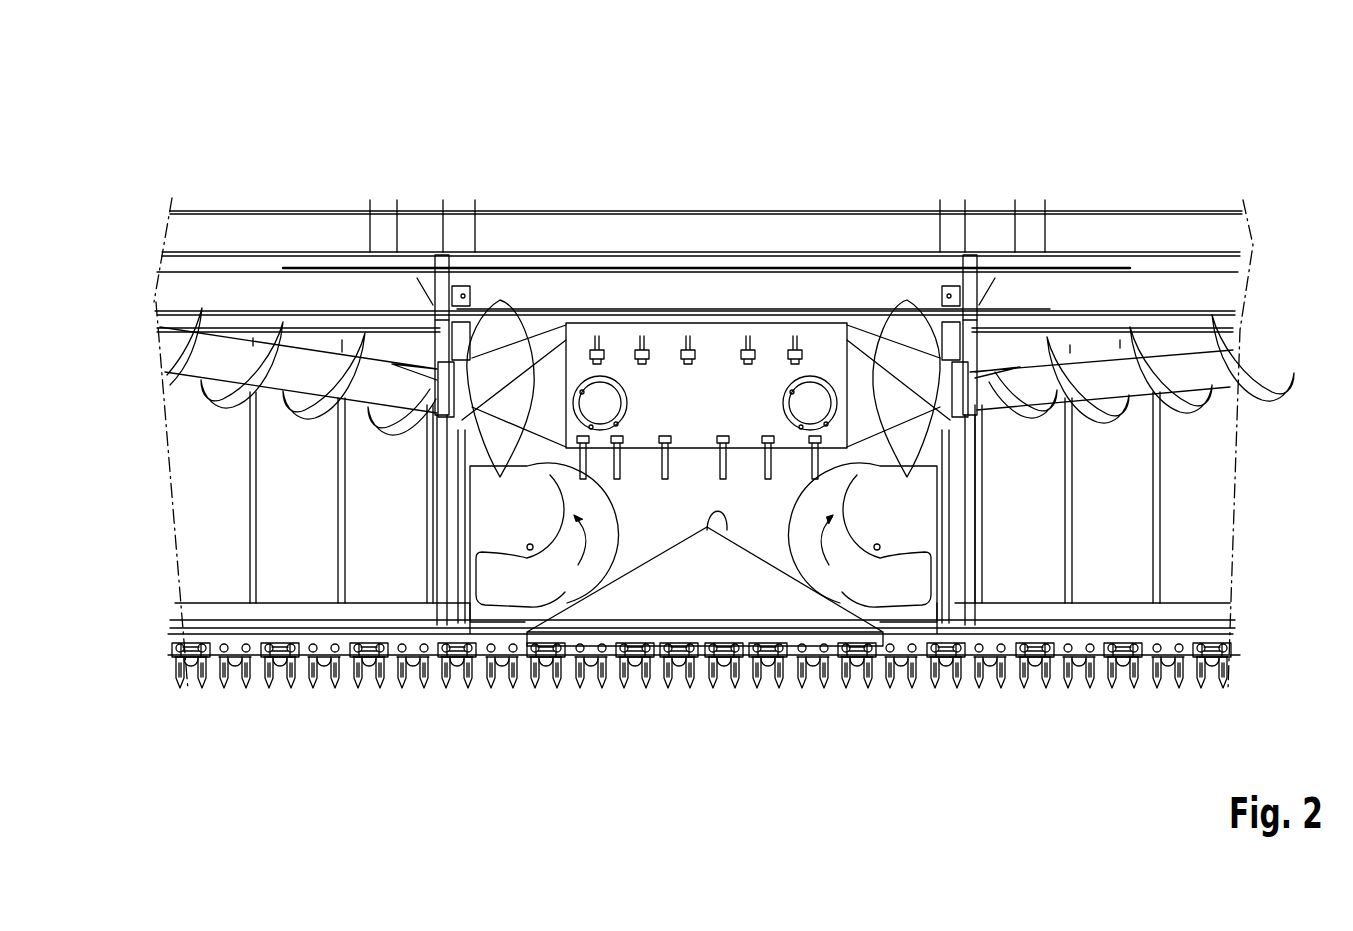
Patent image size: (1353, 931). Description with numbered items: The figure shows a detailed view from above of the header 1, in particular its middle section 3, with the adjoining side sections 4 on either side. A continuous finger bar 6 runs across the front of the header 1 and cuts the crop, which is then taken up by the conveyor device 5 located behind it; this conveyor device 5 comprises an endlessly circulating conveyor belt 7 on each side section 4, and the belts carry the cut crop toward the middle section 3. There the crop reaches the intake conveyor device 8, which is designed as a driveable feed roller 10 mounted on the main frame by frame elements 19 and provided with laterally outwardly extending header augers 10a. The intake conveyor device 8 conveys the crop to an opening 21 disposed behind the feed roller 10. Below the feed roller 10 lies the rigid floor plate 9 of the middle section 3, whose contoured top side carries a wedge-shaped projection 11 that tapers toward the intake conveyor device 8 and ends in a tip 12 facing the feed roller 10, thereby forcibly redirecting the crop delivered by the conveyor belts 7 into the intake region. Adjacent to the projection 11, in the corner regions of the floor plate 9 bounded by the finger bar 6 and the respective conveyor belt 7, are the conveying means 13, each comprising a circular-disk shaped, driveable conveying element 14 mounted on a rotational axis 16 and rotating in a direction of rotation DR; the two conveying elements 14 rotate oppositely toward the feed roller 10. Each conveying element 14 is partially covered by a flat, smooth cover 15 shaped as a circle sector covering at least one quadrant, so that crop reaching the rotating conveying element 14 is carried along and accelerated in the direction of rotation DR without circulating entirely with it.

The header 1 is at (715, 130).
The middle section 3 is at (752, 205).
The side sections 4 is at (170, 185).
The conveyor device 5 is at (158, 462).
The finger bar 6 is at (245, 698).
The conveyor belt 7 is at (207, 527).
The intake conveyor device 8 is at (600, 300).
The floor plate 9 is at (689, 489).
The feed roller 10 is at (681, 330).
The header augers 10a is at (180, 345).
The wedge-shaped projection 11 is at (663, 605).
The tip 12 is at (727, 535).
The conveying means 13 is at (604, 522).
The conveying element 14 is at (549, 601).
The cover 15 is at (523, 511).
The rotational axis 16 is at (527, 546).
The frame elements 19 is at (441, 290).
The opening 21 is at (826, 318).
The direction of rotation DR is at (583, 547).